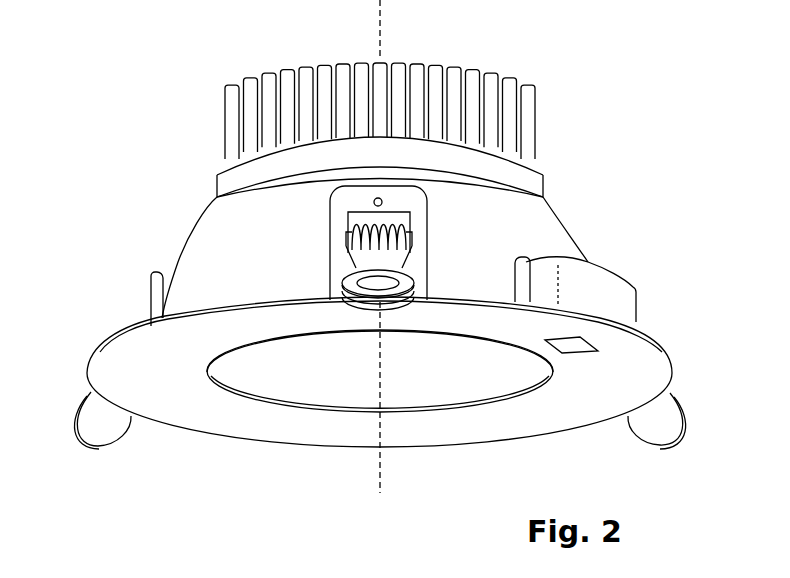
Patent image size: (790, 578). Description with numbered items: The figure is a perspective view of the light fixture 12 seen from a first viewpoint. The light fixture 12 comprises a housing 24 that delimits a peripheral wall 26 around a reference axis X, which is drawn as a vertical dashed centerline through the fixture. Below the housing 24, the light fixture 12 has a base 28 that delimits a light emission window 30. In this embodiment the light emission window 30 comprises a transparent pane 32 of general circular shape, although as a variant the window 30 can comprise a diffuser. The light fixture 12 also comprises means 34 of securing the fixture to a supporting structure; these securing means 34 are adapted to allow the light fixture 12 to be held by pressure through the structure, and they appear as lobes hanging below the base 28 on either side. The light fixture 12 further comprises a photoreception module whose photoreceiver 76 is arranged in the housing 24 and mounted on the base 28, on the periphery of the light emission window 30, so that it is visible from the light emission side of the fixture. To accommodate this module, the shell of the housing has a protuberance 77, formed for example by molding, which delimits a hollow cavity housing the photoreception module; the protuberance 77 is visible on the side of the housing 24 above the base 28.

The light fixture 12 is at (566, 108).
The housing 24 is at (553, 228).
The peripheral wall 26 is at (213, 238).
The base 28 is at (131, 360).
The light emission window 30 is at (289, 397).
The transparent pane 32 is at (463, 378).
The means of securing 34 is at (104, 437).
The photoreceiver 76 is at (600, 360).
The protuberance 77 is at (610, 293).
The reference axis X is at (380, 470).